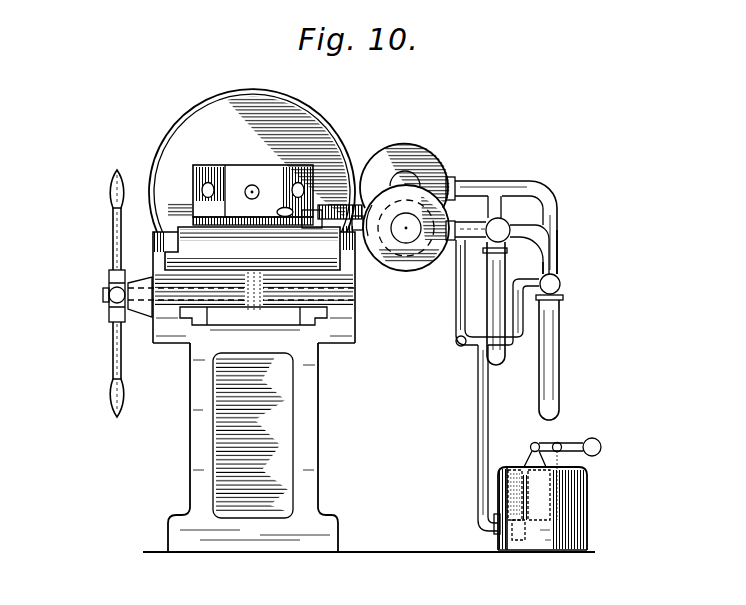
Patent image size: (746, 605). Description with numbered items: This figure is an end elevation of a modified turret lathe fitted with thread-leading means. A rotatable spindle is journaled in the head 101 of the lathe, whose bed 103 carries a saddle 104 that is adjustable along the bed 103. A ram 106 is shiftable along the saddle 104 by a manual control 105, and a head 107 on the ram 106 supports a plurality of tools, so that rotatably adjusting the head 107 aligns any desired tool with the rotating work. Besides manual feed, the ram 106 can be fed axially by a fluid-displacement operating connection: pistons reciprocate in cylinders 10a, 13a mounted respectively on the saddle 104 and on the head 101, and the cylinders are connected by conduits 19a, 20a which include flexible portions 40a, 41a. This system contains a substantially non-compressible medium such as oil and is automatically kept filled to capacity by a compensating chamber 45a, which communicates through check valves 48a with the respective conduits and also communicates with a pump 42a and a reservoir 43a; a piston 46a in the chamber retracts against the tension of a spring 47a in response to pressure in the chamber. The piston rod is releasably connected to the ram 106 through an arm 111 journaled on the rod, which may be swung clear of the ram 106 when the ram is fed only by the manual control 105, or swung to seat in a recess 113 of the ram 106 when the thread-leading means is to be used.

The head 101 is at (223, 108).
The head on the ram 107 is at (208, 172).
The recess of the ram 113 is at (312, 227).
The arm 111 is at (330, 210).
The ram 106 is at (241, 284).
The saddle 104 is at (170, 342).
The manual control 105 is at (112, 365).
The bed 103 is at (322, 436).
The cylinder 13a is at (413, 146).
The cylinder 10a is at (402, 271).
The conduit 20a is at (493, 186).
The conduit 19a is at (558, 213).
The flexible portion 40a is at (553, 337).
The flexible portion 41a is at (492, 286).
The check valve 48a is at (455, 342).
The piston 46a is at (494, 548).
The reservoir 43a is at (588, 490).
The pump 42a is at (577, 553).
The compensating chamber 45a is at (525, 553).
The spring 47a is at (515, 468).